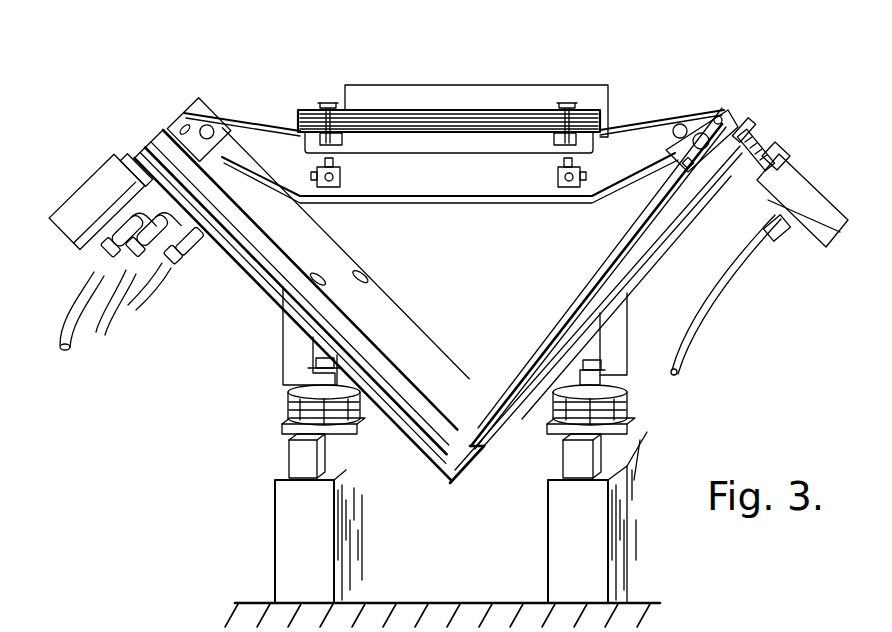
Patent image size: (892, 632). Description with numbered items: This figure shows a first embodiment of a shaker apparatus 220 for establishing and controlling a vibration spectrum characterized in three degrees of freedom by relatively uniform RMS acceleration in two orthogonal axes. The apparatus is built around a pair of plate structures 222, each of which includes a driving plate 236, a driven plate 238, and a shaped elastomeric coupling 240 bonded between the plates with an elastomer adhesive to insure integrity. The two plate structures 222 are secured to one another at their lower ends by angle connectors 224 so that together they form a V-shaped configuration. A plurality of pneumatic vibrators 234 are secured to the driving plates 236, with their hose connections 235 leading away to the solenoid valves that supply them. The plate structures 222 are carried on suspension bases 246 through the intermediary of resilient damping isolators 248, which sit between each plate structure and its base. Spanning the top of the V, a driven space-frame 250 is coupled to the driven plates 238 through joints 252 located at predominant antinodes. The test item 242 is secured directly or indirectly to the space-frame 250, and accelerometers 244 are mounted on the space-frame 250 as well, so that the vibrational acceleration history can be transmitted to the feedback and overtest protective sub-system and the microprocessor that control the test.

The shaker apparatus 220 is at (313, 72).
The plate structures 222 is at (227, 258).
The angle connectors 224 is at (448, 482).
The pneumatic vibrators 234 is at (100, 255).
The hose connections 235 is at (130, 308).
The driving plate 236 is at (257, 270).
The driven plate 238 is at (310, 347).
The shaped elastomeric coupling 240 is at (285, 307).
The test item 242 is at (463, 88).
The accelerometers 244 is at (557, 178).
The suspension bases 246 is at (558, 543).
The resilient damping isolators 248 is at (287, 388).
The driven space-frame 250 is at (247, 136).
The joints 252 is at (185, 112).